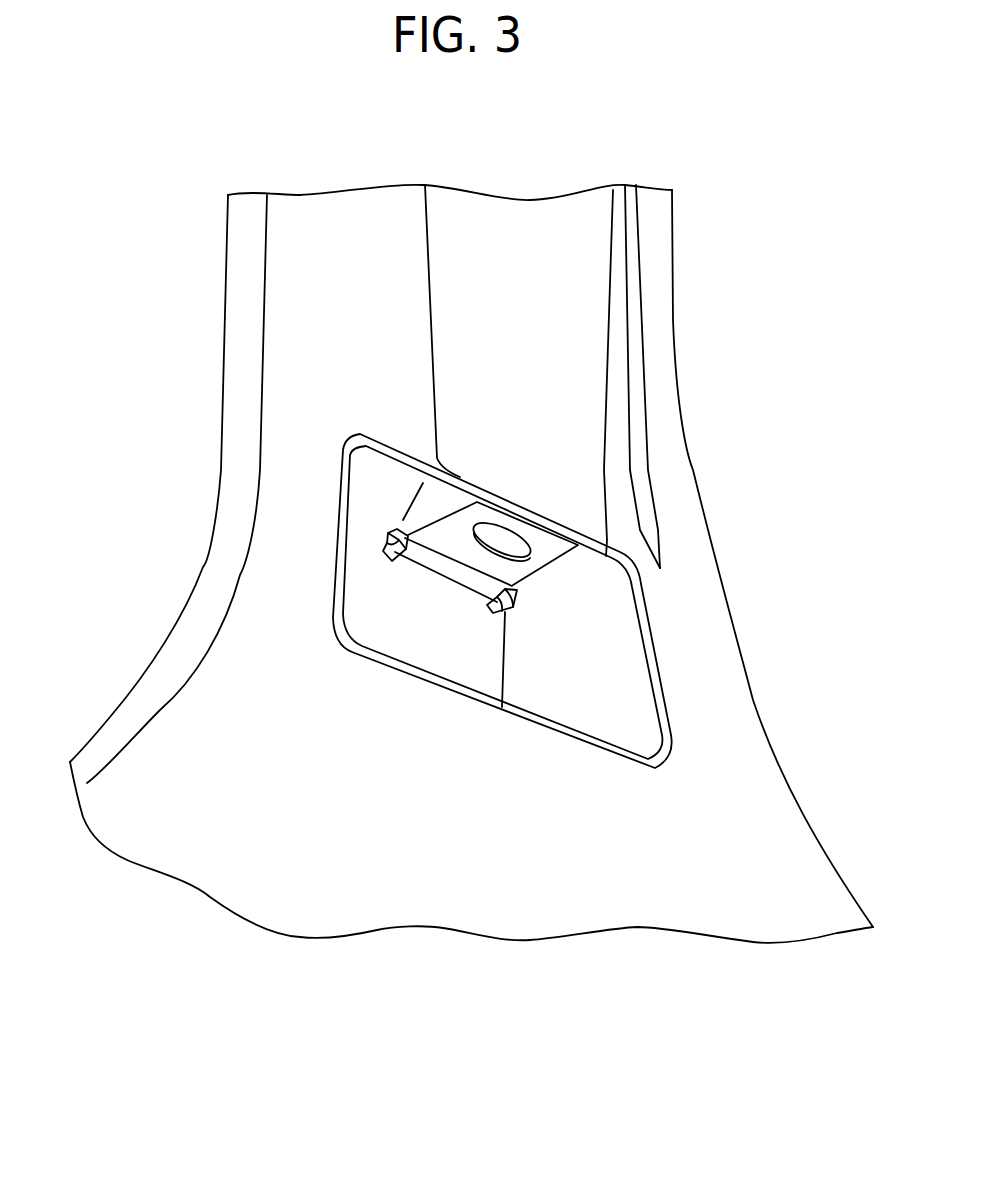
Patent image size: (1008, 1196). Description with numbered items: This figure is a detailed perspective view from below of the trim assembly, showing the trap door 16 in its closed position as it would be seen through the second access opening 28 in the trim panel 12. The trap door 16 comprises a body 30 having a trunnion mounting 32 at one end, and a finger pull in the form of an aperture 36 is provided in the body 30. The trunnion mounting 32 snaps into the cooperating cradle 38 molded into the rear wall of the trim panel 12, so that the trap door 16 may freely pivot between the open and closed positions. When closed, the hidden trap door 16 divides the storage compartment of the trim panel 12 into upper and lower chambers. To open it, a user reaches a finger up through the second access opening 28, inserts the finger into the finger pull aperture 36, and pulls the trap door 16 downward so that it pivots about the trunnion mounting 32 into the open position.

The trim panel 12 is at (658, 273).
The trap door 16 is at (390, 585).
The second access opening 28 is at (603, 563).
The body 30 is at (453, 525).
The trunnion mounting 32 is at (452, 573).
The finger pull aperture 36 is at (527, 558).
The cradle 38 is at (387, 547).